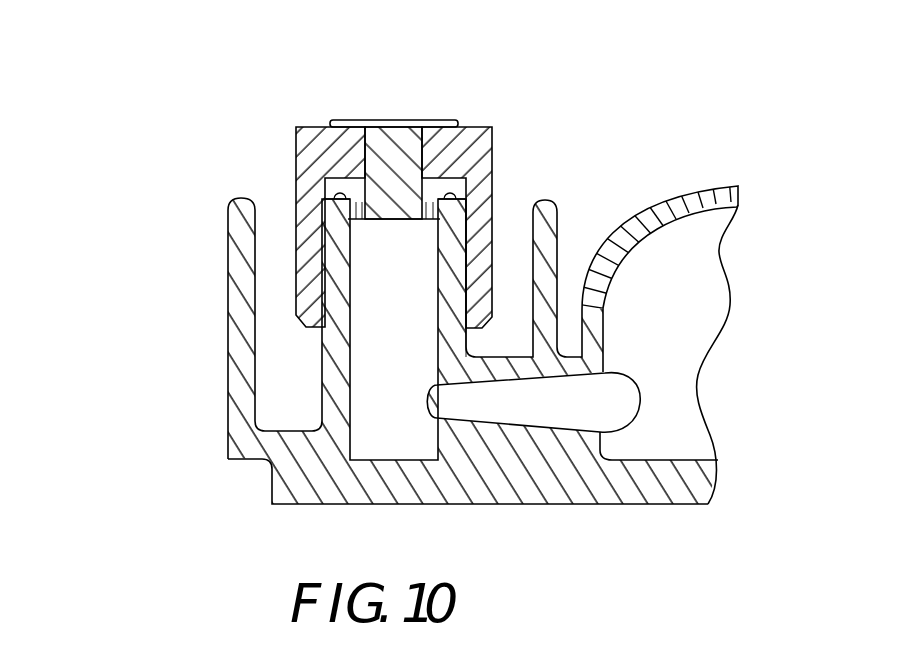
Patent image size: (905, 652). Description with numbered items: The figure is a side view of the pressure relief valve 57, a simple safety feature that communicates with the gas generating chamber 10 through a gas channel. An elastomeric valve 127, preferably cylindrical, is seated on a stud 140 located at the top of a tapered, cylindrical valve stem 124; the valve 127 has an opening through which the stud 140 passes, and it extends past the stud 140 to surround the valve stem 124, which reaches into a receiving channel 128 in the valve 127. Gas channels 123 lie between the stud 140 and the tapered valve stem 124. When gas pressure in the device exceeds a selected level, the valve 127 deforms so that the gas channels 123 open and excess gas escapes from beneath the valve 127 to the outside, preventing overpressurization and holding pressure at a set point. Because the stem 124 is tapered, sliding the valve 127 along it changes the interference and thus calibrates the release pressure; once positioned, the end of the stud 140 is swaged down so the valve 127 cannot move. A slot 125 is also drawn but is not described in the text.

The gas generating chamber 10 is at (717, 156).
The pressure relief valve 57 is at (205, 120).
The gas channels 123 is at (480, 237).
The valve stem 124 is at (340, 370).
The slot 125 is at (557, 410).
The elastomeric valve 127 is at (493, 163).
The receiving channel 128 is at (275, 302).
The stud 140 is at (395, 120).